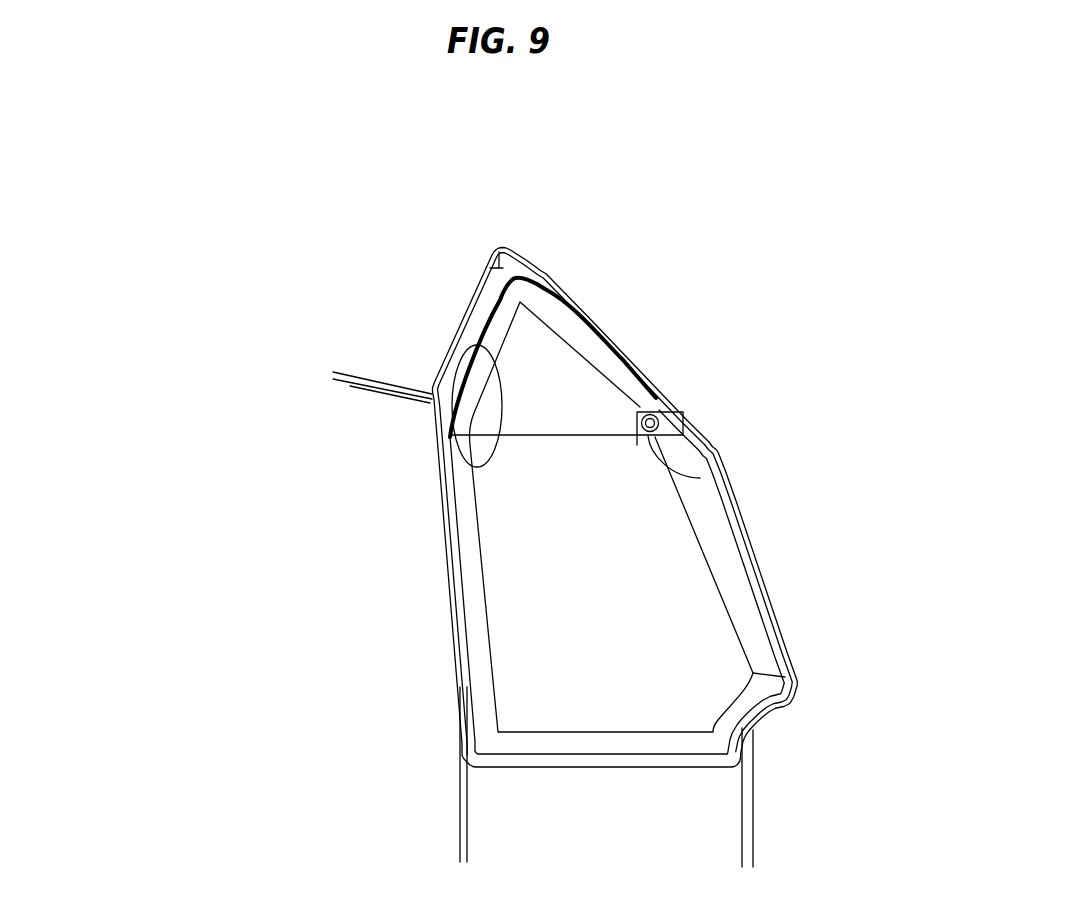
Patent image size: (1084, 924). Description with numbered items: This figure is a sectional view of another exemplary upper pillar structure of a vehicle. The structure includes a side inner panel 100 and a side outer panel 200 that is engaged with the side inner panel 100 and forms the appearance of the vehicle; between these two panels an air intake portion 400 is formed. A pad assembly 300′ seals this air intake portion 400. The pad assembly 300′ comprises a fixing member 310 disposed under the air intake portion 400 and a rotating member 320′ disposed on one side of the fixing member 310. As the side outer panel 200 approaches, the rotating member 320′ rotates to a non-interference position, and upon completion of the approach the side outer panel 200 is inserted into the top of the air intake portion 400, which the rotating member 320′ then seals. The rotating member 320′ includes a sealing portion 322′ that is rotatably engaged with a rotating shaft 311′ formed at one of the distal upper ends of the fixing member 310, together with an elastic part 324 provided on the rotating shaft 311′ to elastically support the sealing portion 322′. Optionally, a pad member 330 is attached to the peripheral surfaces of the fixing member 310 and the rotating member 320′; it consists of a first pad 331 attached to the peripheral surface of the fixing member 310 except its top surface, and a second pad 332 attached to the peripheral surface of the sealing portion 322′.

The side inner panel 100 is at (443, 640).
The side outer panel 200 is at (777, 623).
The pad assembly 300′ is at (700, 455).
The fixing member 310 is at (507, 585).
The rotating shaft 311′ is at (703, 478).
The rotating member 320′ is at (660, 332).
The sealing portion 322′ is at (662, 398).
The elastic part 324 is at (660, 400).
The pad member 330 is at (356, 371).
The first pad 331 is at (468, 345).
The second pad 332 is at (365, 383).
The air intake portion 400 is at (500, 247).